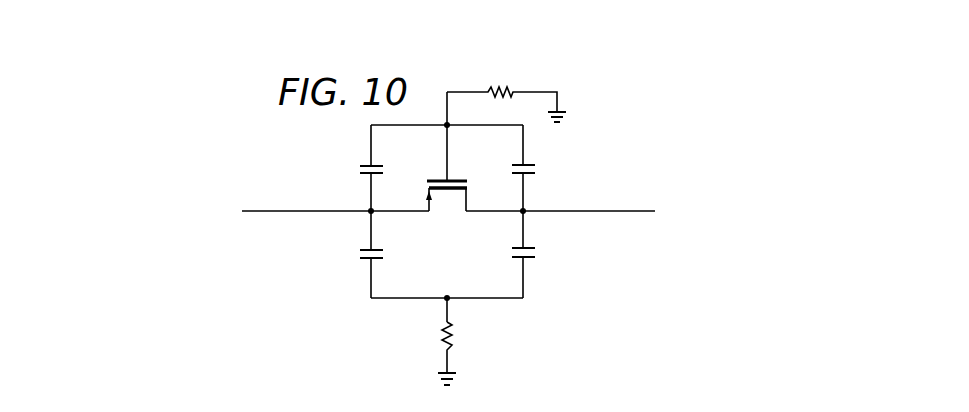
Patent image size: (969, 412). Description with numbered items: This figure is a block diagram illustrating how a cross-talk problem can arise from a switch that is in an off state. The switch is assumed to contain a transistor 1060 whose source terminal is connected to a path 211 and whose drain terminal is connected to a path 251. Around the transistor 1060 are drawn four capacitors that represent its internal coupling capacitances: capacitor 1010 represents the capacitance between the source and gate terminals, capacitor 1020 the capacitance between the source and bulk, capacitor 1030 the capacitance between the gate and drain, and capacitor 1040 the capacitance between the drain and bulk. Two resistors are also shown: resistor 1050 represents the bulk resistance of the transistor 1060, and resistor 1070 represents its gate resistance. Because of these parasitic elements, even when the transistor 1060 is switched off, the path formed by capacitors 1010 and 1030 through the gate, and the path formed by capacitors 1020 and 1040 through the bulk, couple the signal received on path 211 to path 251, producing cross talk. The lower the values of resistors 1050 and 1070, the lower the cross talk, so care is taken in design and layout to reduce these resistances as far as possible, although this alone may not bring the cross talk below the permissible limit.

The path 211 is at (263, 210).
The path 251 is at (633, 210).
The capacitor 1010 is at (357, 168).
The capacitor 1020 is at (357, 255).
The capacitor 1030 is at (537, 168).
The capacitor 1040 is at (537, 255).
The resistor 1050 is at (442, 333).
The transistor 1060 is at (480, 160).
The resistor 1070 is at (502, 83).